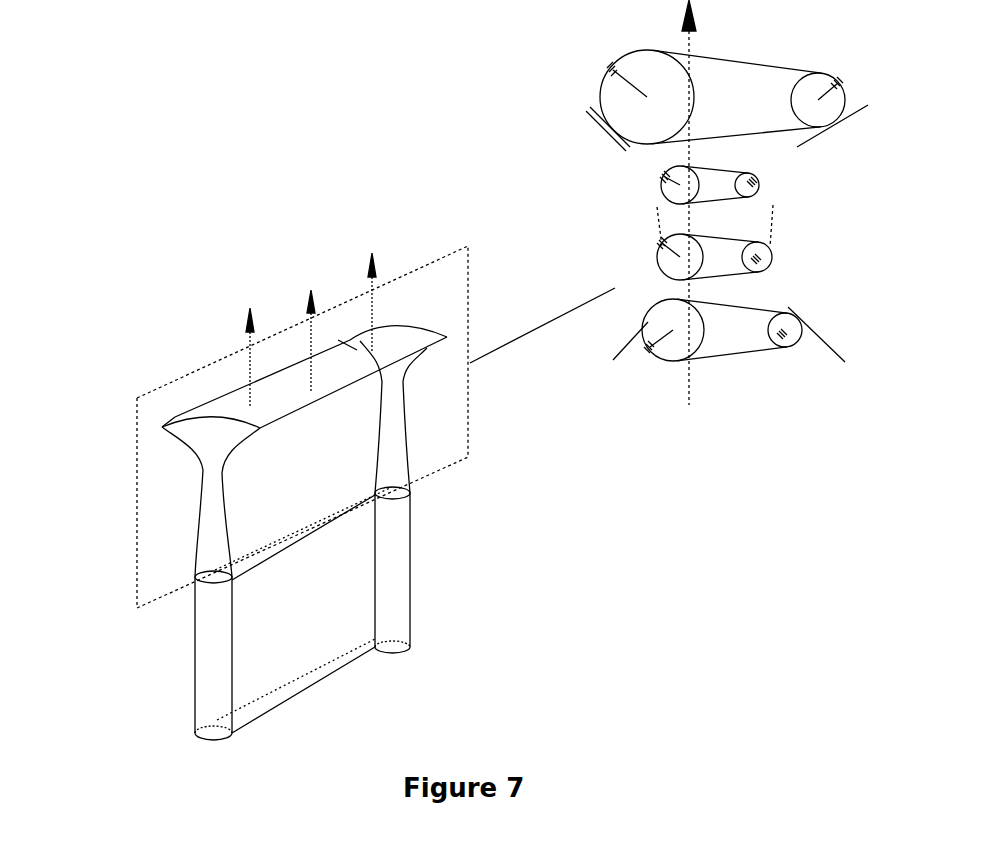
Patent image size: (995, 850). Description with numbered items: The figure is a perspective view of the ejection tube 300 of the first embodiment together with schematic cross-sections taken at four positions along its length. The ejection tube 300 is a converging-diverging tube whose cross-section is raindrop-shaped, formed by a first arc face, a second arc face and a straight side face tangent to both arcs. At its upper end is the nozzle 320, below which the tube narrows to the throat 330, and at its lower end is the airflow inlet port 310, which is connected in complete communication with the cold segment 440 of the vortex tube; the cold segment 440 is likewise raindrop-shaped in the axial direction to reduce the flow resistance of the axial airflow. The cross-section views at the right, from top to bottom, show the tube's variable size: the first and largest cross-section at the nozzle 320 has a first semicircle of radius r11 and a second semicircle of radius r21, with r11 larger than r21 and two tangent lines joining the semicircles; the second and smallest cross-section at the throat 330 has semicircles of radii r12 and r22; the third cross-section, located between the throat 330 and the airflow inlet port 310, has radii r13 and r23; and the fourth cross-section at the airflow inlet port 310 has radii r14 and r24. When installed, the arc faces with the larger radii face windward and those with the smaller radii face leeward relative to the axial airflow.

The ejection tube 300 is at (402, 403).
The airflow inlet port 310 is at (197, 577).
The nozzle 320 is at (173, 417).
The throat 330 is at (200, 472).
The cold segment 440 is at (413, 562).
The radius of first semicircle of first cross-section r11 is at (647, 97).
The radius of first semicircle of second cross-section r12 is at (682, 185).
The radius of first semicircle of third cross-section r13 is at (662, 257).
The radius of first semicircle of fourth cross-section r14 is at (673, 330).
The radius of second semicircle of first cross-section r21 is at (818, 100).
The radius of second semicircle of second cross-section r22 is at (751, 175).
The radius of second semicircle of third cross-section r23 is at (760, 267).
The radius of second semicircle of fourth cross-section r24 is at (787, 342).